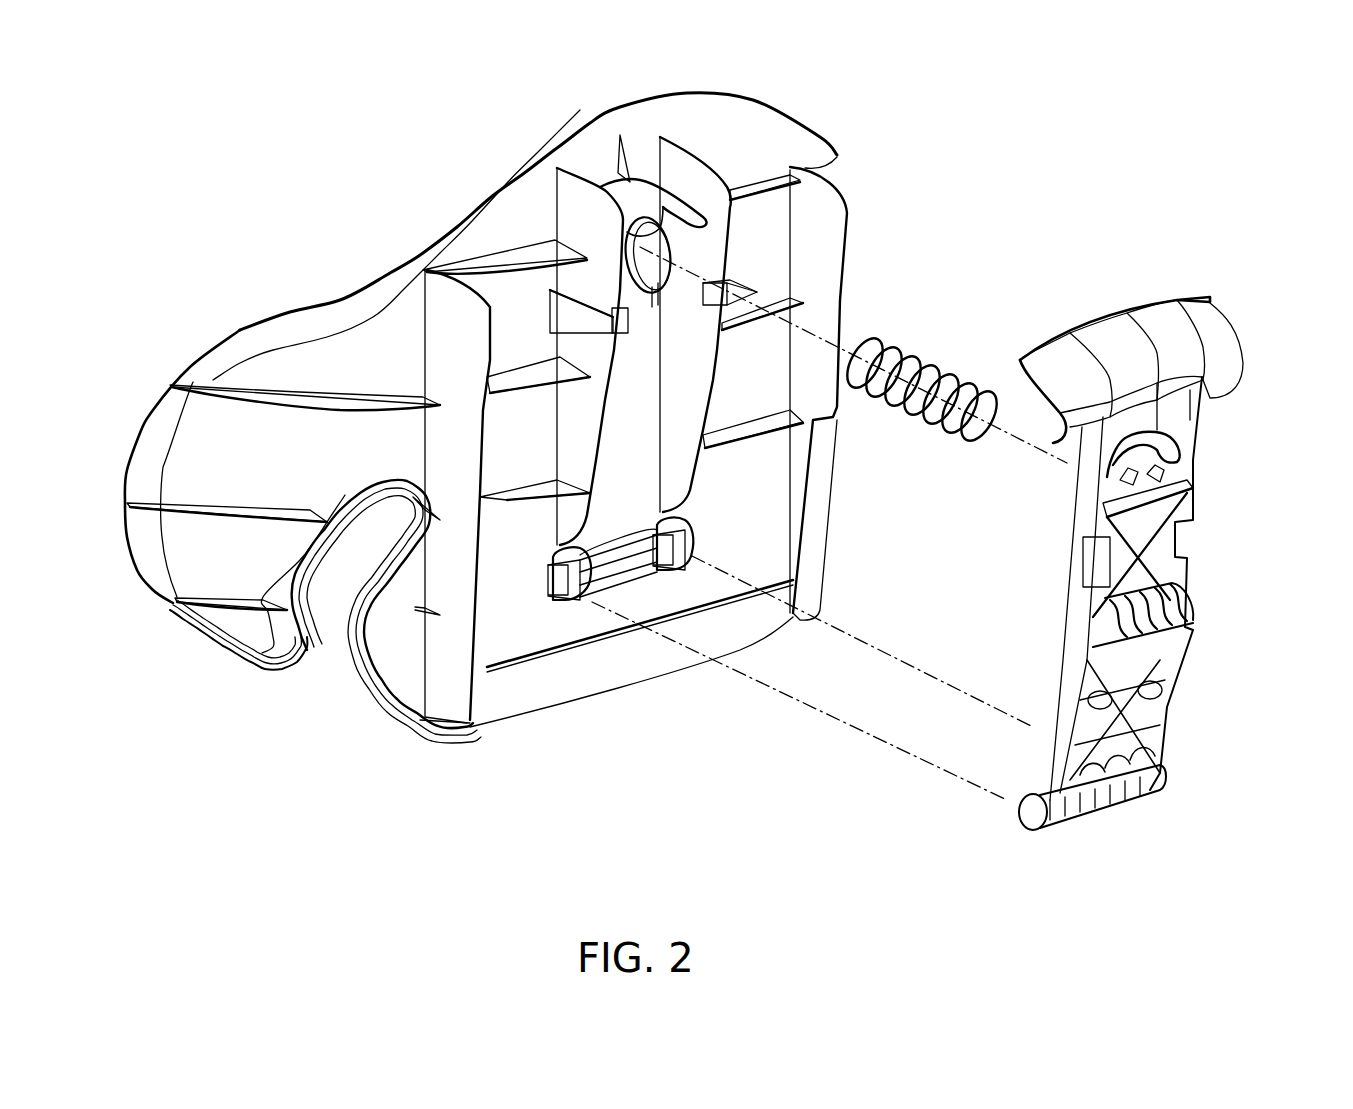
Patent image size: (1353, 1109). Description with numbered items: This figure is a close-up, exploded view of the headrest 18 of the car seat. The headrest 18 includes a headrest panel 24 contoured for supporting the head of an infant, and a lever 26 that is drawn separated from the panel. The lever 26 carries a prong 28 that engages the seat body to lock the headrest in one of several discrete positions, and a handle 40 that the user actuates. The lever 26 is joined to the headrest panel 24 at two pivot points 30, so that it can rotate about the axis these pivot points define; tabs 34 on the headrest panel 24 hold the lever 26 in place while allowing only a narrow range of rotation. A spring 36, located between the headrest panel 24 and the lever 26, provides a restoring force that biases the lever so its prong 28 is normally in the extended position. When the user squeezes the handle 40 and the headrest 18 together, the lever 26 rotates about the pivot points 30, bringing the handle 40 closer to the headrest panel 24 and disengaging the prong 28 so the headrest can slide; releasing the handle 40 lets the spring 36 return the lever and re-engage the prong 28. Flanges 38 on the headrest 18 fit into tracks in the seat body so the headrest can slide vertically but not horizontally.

The headrest 18 is at (242, 196).
The headrest panel 24 is at (467, 197).
The lever 26 is at (1200, 460).
The prong 28 is at (1195, 628).
The pivot points 30 is at (667, 598).
The tabs 34 is at (727, 288).
The spring 36 is at (940, 365).
The flanges 38 is at (470, 690).
The handle 40 is at (1162, 298).